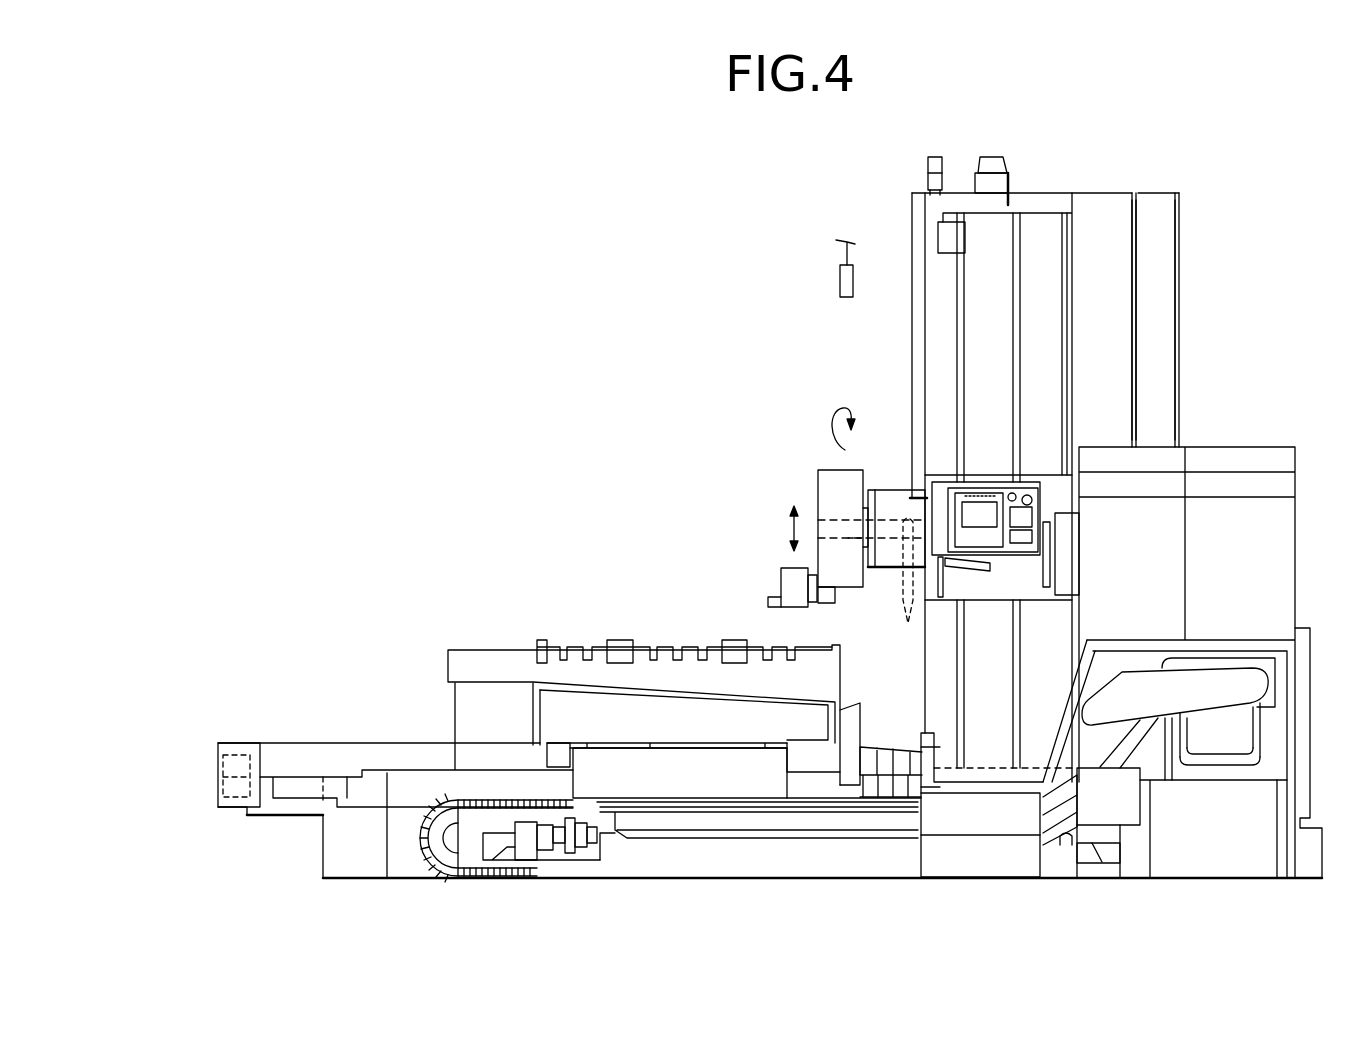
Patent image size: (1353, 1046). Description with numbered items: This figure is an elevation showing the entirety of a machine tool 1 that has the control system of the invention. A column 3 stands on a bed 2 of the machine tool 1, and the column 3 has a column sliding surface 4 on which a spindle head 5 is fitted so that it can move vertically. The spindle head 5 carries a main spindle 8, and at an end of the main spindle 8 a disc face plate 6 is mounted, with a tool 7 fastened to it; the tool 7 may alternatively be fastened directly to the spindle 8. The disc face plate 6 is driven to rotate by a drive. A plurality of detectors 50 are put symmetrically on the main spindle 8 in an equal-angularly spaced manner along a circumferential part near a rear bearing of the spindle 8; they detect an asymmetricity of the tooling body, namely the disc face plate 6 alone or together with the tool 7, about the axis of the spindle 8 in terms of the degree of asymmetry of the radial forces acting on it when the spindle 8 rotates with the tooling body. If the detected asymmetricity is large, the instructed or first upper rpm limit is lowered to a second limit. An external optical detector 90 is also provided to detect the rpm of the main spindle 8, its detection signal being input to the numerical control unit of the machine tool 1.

The machine tool 1 is at (1103, 158).
The bed 2 is at (983, 827).
The column 3 is at (1162, 328).
The column sliding surface 4 is at (1120, 263).
The spindle head 5 is at (882, 490).
The disc face plate 6 is at (818, 490).
The tool 7 is at (781, 582).
The main spindle 8 is at (848, 540).
The detectors 50 is at (902, 592).
The external optical detector 90 is at (840, 278).